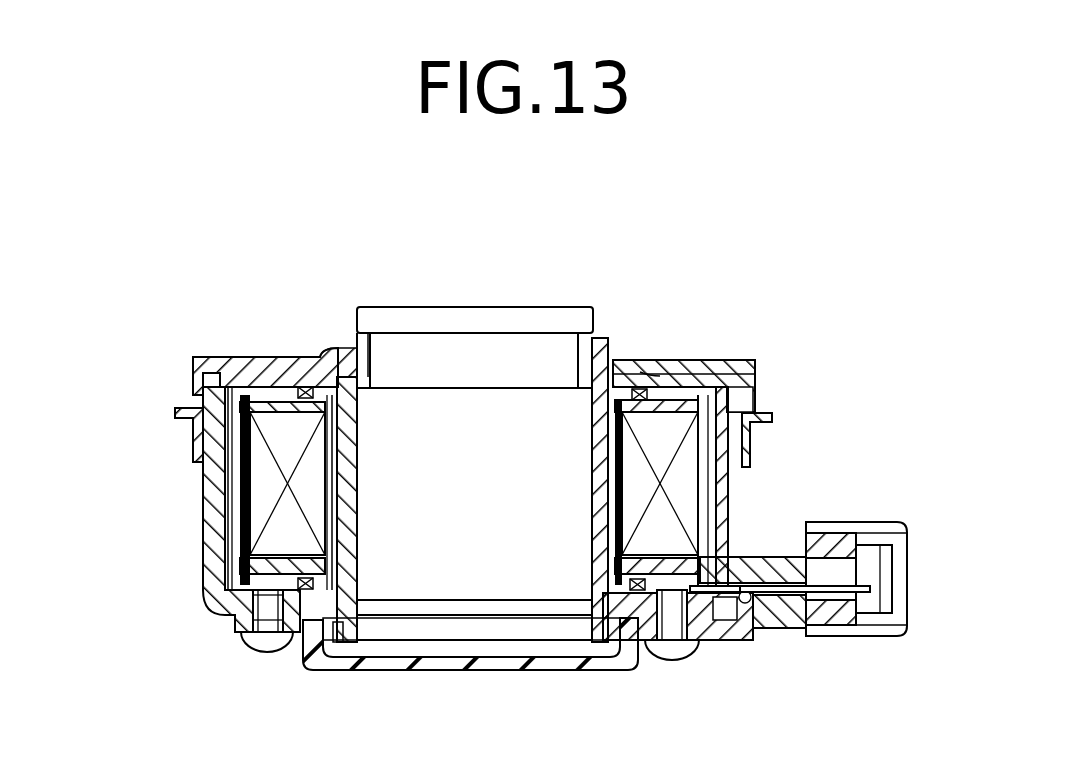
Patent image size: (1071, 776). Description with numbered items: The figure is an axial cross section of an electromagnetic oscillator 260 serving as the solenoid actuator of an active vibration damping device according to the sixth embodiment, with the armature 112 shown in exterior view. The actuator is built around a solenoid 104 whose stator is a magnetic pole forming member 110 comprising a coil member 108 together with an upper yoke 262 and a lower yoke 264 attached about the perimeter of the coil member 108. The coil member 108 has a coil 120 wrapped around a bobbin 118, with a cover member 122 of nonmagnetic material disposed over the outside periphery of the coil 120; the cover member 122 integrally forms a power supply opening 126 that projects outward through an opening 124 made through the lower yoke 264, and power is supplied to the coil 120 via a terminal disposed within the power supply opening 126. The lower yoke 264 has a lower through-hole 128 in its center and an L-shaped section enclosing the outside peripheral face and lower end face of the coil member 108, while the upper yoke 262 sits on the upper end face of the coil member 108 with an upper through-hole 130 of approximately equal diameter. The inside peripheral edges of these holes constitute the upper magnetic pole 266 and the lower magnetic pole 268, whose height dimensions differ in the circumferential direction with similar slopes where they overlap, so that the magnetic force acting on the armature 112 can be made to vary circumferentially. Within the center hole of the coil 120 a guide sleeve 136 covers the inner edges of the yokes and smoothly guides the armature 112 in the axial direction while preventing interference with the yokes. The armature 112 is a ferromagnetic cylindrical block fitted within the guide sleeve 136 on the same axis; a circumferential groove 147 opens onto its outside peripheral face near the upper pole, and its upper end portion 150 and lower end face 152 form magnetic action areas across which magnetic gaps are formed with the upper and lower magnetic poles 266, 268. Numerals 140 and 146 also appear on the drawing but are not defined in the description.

The electromagnetic oscillator 260 is at (697, 240).
The armature 112 is at (522, 282).
The solenoid 104 is at (718, 295).
The upper end portion 150 is at (410, 318).
The upper through-hole 130 is at (372, 345).
The upper magnetic pole 266 is at (343, 350).
The circumferential groove 147 is at (330, 360).
The upper yoke 262 is at (667, 383).
The cover member 122 is at (690, 395).
The magnetic pole forming member 110 is at (780, 360).
The tab 140 is at (192, 398).
The bobbin 118 is at (702, 437).
The coil 120 is at (670, 487).
The opening 124 is at (745, 478).
The power supply opening 126 is at (835, 540).
The lower yoke 264 is at (218, 488).
The coil member 108 is at (724, 510).
The guide sleeve 136 is at (345, 510).
The lower magnetic pole 268 is at (343, 630).
The lower through-hole 128 is at (352, 630).
The base plate 146 is at (460, 662).
The lower end face 152 is at (533, 615).